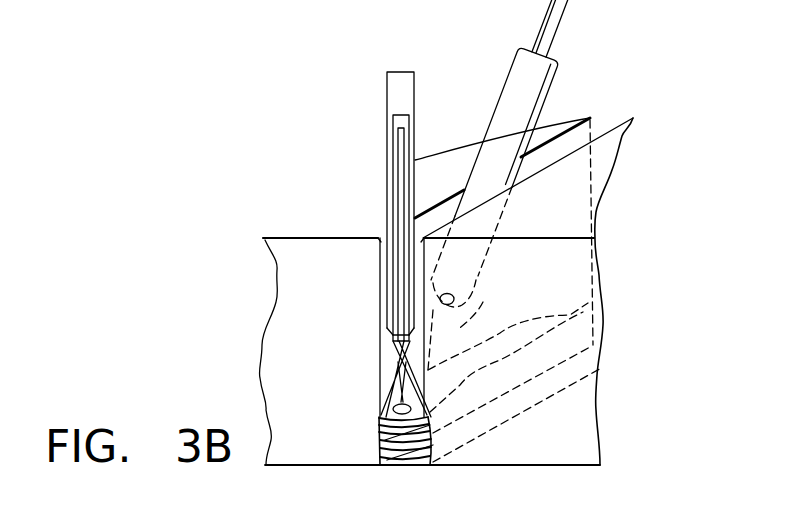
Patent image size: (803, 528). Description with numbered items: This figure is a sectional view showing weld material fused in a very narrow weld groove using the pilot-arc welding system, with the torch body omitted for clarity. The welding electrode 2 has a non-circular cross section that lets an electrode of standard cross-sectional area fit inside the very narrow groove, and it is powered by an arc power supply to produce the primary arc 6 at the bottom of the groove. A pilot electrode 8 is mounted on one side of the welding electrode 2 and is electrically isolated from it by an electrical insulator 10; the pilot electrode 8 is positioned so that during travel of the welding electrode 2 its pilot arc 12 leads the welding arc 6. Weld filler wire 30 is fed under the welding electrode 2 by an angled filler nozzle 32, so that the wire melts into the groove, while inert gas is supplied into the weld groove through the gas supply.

The welding electrode 2 is at (387, 91).
The electrical insulator 10 is at (395, 117).
The pilot electrode 8 is at (400, 187).
The primary arc 6 is at (395, 385).
The pilot arc 12 is at (380, 432).
The weld filler wire 30 is at (487, 295).
The filler nozzle 32 is at (553, 80).